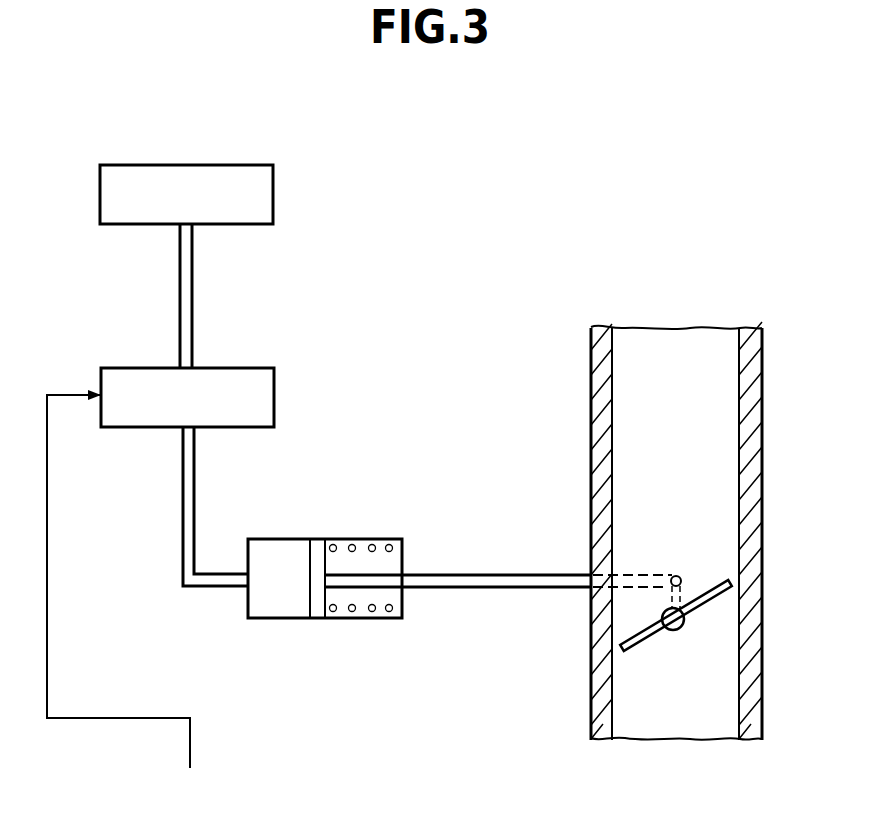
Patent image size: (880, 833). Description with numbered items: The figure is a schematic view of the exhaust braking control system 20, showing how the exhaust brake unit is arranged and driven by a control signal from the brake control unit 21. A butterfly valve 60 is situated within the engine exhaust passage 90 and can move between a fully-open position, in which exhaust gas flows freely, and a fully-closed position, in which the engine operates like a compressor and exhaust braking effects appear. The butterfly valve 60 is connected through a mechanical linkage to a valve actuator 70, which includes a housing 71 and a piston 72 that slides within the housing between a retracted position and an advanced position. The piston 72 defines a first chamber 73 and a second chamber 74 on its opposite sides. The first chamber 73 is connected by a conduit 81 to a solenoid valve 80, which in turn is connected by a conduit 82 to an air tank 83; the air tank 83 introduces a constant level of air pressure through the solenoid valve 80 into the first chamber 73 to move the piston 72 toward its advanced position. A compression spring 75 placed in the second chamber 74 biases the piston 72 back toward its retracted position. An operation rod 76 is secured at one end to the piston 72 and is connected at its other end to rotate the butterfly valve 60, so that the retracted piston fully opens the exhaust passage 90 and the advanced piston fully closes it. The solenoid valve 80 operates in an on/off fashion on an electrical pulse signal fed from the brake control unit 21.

The air tank 83 is at (273, 188).
The conduit 82 is at (192, 283).
The solenoid valve 80 is at (274, 390).
The conduit 81 is at (182, 488).
The valve actuator 70 is at (328, 557).
The housing 71 is at (280, 539).
The piston 72 is at (318, 618).
The first chamber 73 is at (268, 618).
The second chamber 74 is at (362, 600).
The compression spring 75 is at (370, 540).
The operation rod 76 is at (500, 574).
The engine exhaust passage 90 is at (591, 383).
The butterfly valve 60 is at (615, 657).
The exhaust braking control system 20 is at (447, 724).
The brake control unit 21 is at (231, 592).